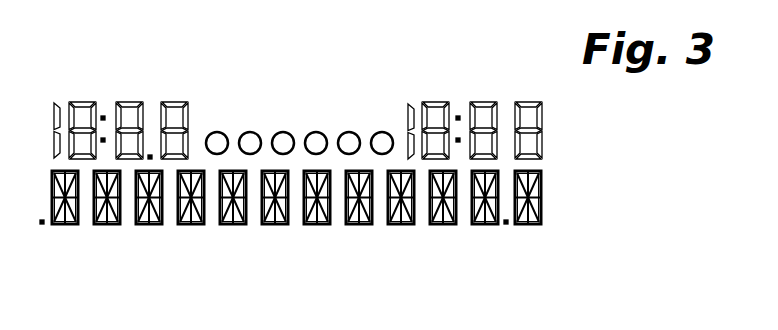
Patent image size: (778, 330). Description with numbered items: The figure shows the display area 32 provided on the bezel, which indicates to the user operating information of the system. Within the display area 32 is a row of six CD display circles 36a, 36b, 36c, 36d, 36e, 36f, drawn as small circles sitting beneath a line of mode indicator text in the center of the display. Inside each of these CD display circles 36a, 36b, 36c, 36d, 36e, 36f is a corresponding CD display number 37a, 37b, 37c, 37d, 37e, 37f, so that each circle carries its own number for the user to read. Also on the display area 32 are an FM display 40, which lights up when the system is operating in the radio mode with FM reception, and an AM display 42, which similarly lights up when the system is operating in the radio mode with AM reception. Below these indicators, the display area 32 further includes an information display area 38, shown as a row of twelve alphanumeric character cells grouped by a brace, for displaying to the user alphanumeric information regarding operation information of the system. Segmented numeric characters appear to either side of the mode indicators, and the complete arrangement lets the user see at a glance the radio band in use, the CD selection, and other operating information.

The display area 32 is at (426, 92).
The information display area 38 is at (576, 172).
The CD display number 37a is at (203, 100).
The CD display number 37b is at (245, 100).
The CD display number 37c is at (284, 100).
The CD display number 37d is at (317, 100).
The CD display number 37e is at (357, 100).
The CD display number 37f is at (390, 100).
The FM display 40 is at (223, 100).
The AM display 42 is at (291, 100).
The CD display circle 36a is at (217, 154).
The CD display circle 36b is at (250, 154).
The CD display circle 36c is at (283, 154).
The CD display circle 36d is at (316, 154).
The CD display circle 36e is at (349, 154).
The CD display circle 36f is at (382, 154).